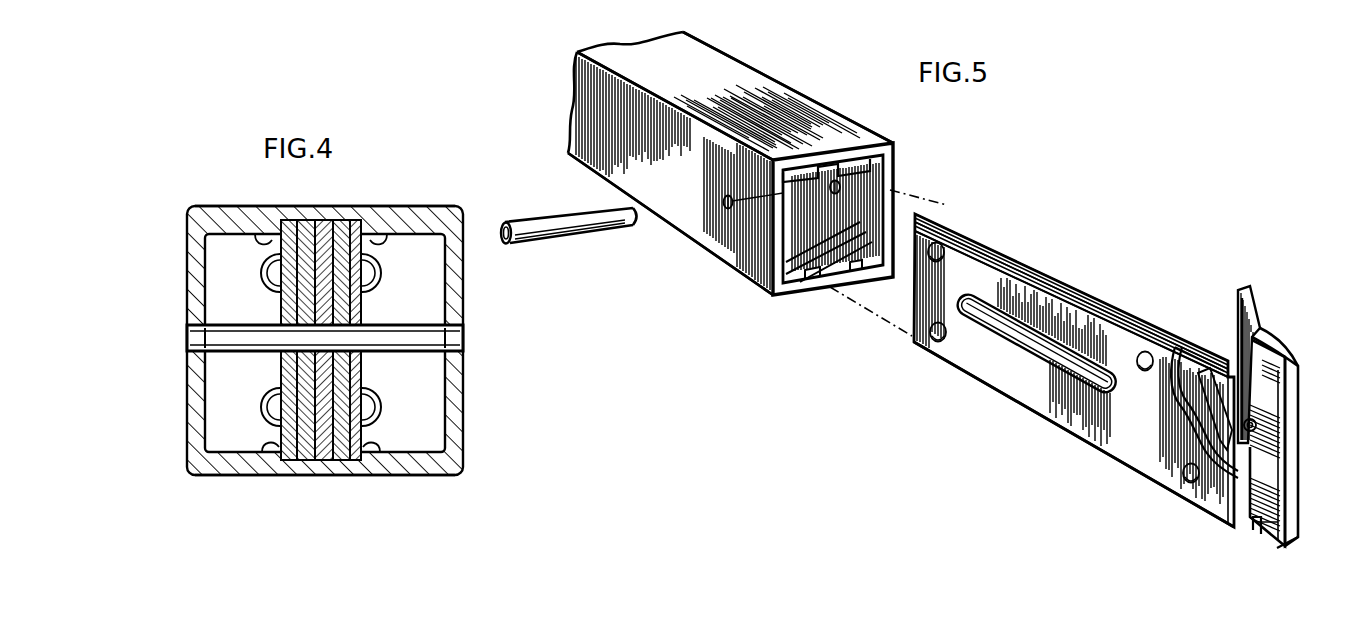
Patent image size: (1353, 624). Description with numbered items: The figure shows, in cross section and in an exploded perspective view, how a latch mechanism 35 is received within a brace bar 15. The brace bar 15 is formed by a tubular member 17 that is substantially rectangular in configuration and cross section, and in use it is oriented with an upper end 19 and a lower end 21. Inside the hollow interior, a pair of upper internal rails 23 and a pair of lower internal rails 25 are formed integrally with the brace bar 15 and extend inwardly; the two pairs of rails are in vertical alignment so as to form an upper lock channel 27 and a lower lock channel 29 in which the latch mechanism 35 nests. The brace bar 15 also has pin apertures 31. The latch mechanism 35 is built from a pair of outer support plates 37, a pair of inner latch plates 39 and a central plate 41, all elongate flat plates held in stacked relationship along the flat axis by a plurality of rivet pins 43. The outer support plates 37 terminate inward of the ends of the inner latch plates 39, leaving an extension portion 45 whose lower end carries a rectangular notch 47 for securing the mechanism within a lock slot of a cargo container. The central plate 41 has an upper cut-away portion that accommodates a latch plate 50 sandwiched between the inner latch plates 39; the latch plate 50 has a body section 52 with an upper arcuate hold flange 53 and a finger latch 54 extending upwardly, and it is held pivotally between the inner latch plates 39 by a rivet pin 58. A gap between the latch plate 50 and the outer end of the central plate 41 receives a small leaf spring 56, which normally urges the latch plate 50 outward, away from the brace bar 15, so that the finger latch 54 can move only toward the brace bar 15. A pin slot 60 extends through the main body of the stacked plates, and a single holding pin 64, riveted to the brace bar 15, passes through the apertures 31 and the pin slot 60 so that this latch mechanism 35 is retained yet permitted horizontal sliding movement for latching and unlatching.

In FIG. 4, the brace bar 15 is at (470, 375).
In FIG. 5, the brace bar 15 is at (812, 82).
In FIG. 5, the tubular member 17 is at (813, 117).
In FIG. 4, the upper end 19 is at (393, 206).
In FIG. 5, the upper end 19 is at (762, 97).
In FIG. 4, the lower end 21 is at (420, 476).
In FIG. 5, the lower end 21 is at (753, 290).
In FIG. 4, the upper internal rails 23 is at (260, 234).
In FIG. 4, the lower internal rails 25 is at (273, 440).
In FIG. 4, the upper lock channel 27 is at (340, 227).
In FIG. 5, the upper lock channel 27 is at (852, 157).
In FIG. 4, the lower lock channel 29 is at (313, 462).
In FIG. 5, the lower lock channel 29 is at (833, 267).
In FIG. 4, the pin apertures 31 is at (187, 338).
In FIG. 5, the pin apertures 31 is at (840, 189).
In FIG. 5, the latch mechanism 35 is at (1132, 290).
In FIG. 4, the outer support plates 37 is at (365, 358).
In FIG. 5, the outer support plates 37 is at (965, 348).
In FIG. 4, the inner latch plates 39 is at (303, 365).
In FIG. 5, the inner latch plates 39 is at (983, 228).
In FIG. 4, the central plate 41 is at (308, 430).
In FIG. 5, the central plate 41 is at (1013, 250).
In FIG. 4, the rivet pins 43 is at (262, 276).
In FIG. 5, the rivet pins 43 is at (912, 340).
In FIG. 5, the extension portion 45 is at (1264, 479).
In FIG. 5, the rectangular notch 47 is at (1255, 526).
In FIG. 5, the latch plate 50 is at (1262, 415).
In FIG. 5, the body section 52 is at (1299, 376).
In FIG. 5, the upper arcuate hold flange 53 is at (1282, 342).
In FIG. 5, the finger latch 54 is at (1250, 290).
In FIG. 5, the leaf spring 56 is at (1186, 408).
In FIG. 5, the rivet pin 58 is at (1256, 426).
In FIG. 5, the pin slot 60 is at (1036, 336).
In FIG. 4, the single holding pin 64 is at (213, 326).
In FIG. 5, the single holding pin 64 is at (550, 213).